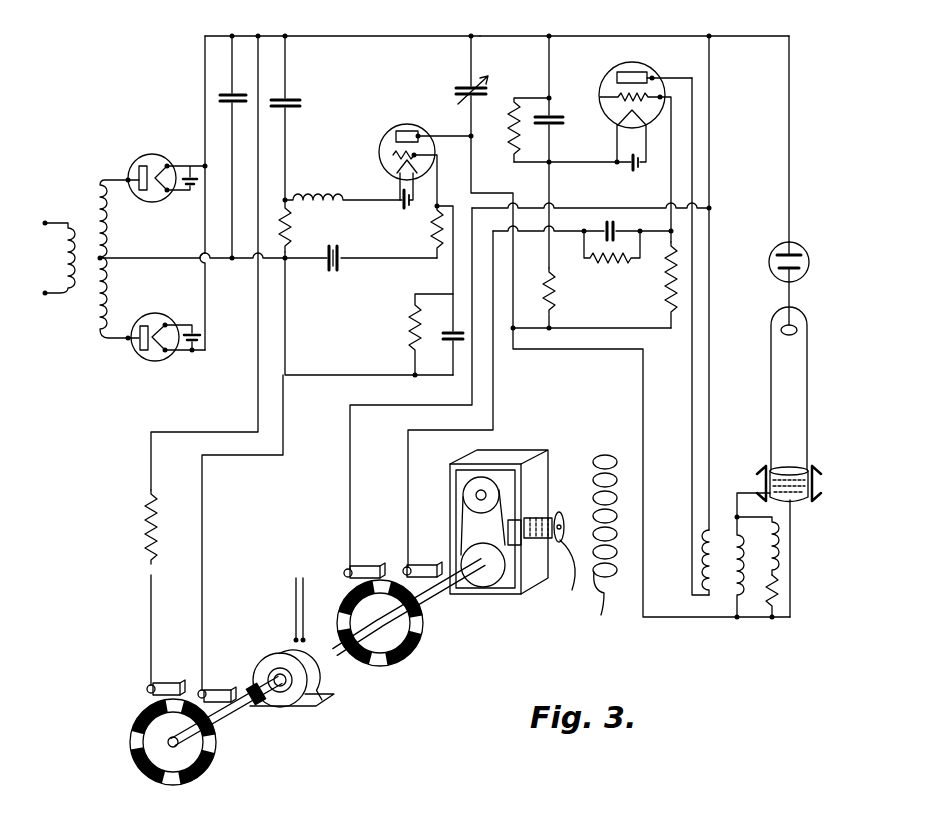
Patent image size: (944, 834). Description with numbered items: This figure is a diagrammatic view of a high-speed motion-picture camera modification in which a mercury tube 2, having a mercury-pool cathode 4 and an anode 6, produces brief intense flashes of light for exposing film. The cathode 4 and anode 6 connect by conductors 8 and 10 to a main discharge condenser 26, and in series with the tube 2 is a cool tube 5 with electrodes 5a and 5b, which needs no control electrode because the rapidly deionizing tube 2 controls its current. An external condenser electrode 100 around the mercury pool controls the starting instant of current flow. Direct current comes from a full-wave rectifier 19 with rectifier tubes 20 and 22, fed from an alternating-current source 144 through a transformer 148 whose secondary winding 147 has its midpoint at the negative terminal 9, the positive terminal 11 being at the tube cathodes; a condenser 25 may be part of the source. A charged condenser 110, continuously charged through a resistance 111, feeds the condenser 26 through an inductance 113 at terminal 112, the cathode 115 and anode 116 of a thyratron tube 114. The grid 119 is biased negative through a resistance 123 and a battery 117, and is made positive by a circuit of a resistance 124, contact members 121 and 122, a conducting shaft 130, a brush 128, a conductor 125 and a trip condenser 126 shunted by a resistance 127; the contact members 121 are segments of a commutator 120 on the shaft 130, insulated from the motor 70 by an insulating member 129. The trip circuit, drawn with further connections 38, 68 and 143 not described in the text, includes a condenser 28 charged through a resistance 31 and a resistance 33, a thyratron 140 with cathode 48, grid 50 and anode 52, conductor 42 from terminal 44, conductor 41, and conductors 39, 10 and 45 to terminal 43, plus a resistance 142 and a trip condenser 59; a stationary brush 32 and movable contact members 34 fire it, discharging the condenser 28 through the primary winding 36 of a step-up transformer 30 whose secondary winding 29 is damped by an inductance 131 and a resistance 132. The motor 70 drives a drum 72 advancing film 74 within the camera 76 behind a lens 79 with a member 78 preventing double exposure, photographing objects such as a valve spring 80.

The mercury tube 2 is at (770, 388).
The mercury-pool cathode 4 is at (796, 497).
The tube 5 is at (770, 265).
The electrode 5a is at (782, 252).
The electrode 5b is at (782, 276).
The anode 6 is at (782, 334).
The conductor 8 is at (576, 352).
The negative terminal 9 is at (108, 256).
The conductor 10 is at (612, 36).
The positive terminal 11 is at (200, 160).
The full-wave rectifier 19 is at (159, 232).
The rectifier tube 20 is at (142, 154).
The rectifier tube 22 is at (142, 360).
The condenser 25 is at (237, 107).
The main discharge condenser 26 is at (456, 82).
The condenser 28 is at (557, 126).
The secondary winding 29 is at (742, 548).
The step-up transformer 30 is at (724, 535).
The resistance 31 is at (558, 298).
The stationary brush 32 is at (365, 566).
The resistance 33 is at (508, 135).
The movable contact members 34 is at (378, 660).
The primary winding 36 is at (700, 572).
The conductor 38 is at (546, 36).
The conductor 39 is at (711, 118).
The conductor 41 is at (694, 168).
The conductor 42 is at (605, 168).
The terminal 43 is at (545, 98).
The terminal 44 is at (556, 166).
The conductor 45 is at (548, 58).
The cathode 48 is at (618, 130).
The grid 50 is at (602, 97).
The anode 52 is at (646, 72).
The trip condenser 59 is at (616, 220).
The commutator 68 is at (425, 632).
The motor 70 is at (322, 708).
The drum 72 is at (488, 588).
The film 74 is at (502, 588).
The camera 76 is at (512, 458).
The member 78 is at (570, 580).
The lens 79 is at (538, 516).
The valve spring 80 is at (608, 558).
The external condenser electrode 100 is at (764, 470).
The condenser 110 is at (292, 90).
The resistance 111 is at (298, 232).
The terminal 112 is at (286, 195).
The inductance 113 is at (318, 196).
The thyratron tube 114 is at (388, 128).
The cathode 115 is at (395, 172).
The anode 116 is at (405, 130).
The battery 117 is at (328, 273).
The grid 119 is at (393, 155).
The commutator 120 is at (160, 778).
The contact members 121 is at (140, 765).
The contact member 122 is at (148, 690).
The resistance 123 is at (430, 240).
The resistance 124 is at (148, 540).
The conductor 125 is at (203, 530).
The trip condenser 126 is at (456, 345).
The shunt resistance 127 is at (408, 338).
The brush 128 is at (210, 686).
The insulating member 129 is at (258, 710).
The conducting shaft 130 is at (222, 752).
The inductance 131 is at (780, 548).
The resistance 132 is at (765, 608).
The thyratron 140 is at (616, 66).
The resistance 142 is at (688, 308).
The resistor 143 is at (604, 264).
The source of alternating current 144 is at (50, 210).
The secondary winding 147 is at (110, 303).
The transformer 148 is at (76, 300).